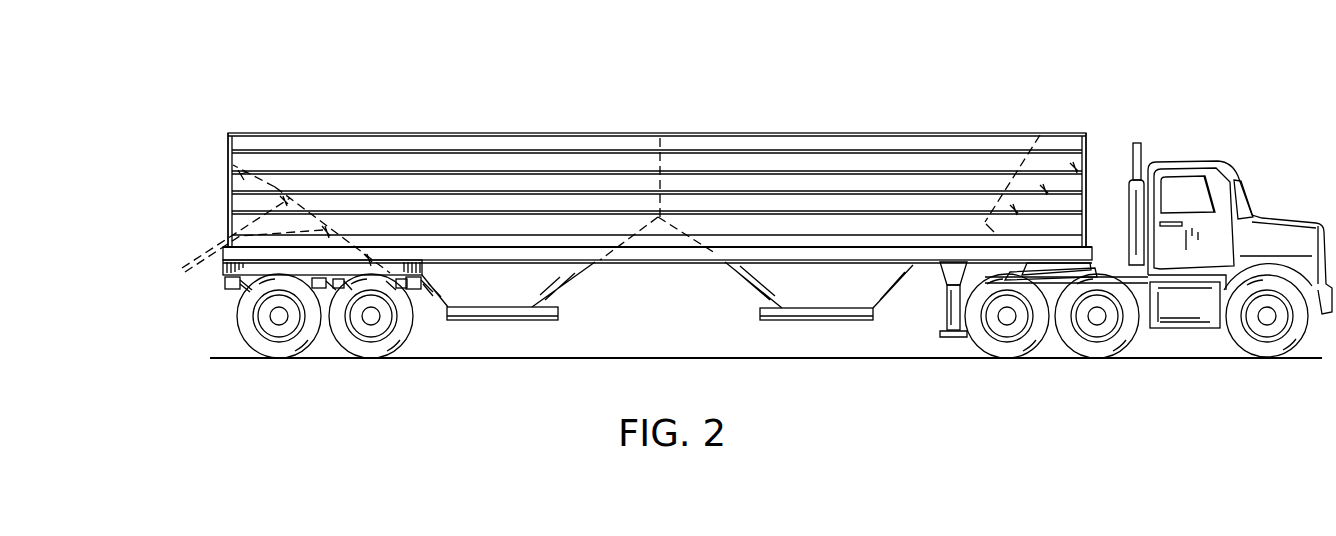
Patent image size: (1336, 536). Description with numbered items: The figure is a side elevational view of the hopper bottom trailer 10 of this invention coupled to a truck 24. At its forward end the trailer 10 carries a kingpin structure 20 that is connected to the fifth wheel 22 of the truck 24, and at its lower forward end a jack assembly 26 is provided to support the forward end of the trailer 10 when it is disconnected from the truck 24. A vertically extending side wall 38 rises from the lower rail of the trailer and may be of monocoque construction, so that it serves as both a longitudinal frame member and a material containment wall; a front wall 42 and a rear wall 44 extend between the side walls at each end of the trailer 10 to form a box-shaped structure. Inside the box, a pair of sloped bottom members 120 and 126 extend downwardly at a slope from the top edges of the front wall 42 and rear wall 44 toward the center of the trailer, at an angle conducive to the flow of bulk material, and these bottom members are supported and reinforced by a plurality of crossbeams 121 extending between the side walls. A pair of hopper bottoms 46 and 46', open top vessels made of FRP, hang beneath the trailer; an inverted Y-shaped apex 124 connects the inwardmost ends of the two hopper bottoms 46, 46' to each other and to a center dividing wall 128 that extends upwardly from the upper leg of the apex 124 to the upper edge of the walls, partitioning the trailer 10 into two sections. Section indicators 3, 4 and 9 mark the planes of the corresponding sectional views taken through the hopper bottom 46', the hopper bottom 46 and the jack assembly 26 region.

The hopper bottom trailer 10 is at (1016, 116).
The kingpin structure 20 is at (1088, 197).
The fifth wheel 22 is at (1050, 280).
The truck 24 is at (1248, 185).
The jack assembly 26 is at (943, 322).
The side wall 38 is at (797, 185).
The front wall 42 is at (1050, 263).
The rear wall 44 is at (225, 207).
The hopper bottom 46 is at (800, 307).
The hopper bottom 46' is at (525, 307).
The sloped bottom member 120 is at (1040, 135).
The crossbeams 121 is at (240, 248).
The inverted Y-shaped apex 124 is at (658, 217).
The sloped bottom member 126 is at (275, 187).
The center dividing wall 128 is at (660, 165).
The section line 3- 3 is at (497, 284).
The section line 4- 4 is at (820, 340).
The section line 9- 9 is at (938, 223).